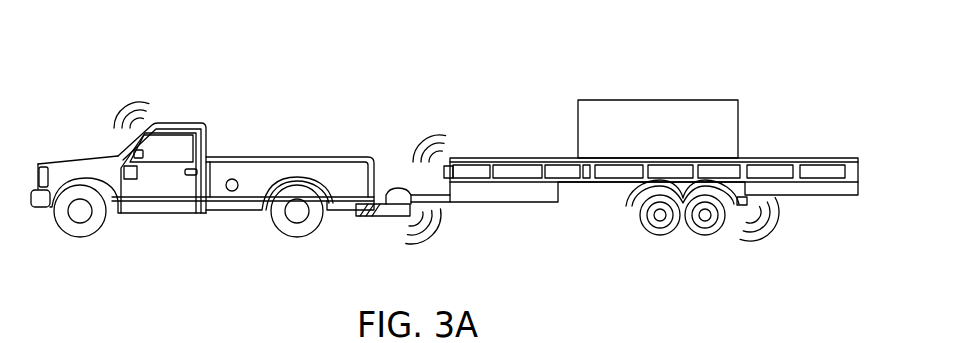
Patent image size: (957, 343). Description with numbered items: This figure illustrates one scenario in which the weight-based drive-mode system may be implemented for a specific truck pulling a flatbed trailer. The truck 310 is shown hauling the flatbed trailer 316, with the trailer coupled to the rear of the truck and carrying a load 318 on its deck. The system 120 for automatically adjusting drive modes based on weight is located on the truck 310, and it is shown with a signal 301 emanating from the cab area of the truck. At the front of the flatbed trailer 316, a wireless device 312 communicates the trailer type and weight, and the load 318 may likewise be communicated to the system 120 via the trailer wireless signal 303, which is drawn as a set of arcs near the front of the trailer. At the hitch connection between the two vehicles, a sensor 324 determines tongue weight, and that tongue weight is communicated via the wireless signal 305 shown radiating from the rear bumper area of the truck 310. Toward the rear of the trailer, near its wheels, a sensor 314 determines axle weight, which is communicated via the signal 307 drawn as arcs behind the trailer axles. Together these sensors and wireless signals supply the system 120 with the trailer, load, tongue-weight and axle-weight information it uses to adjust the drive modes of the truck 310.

The system 120 is at (130, 180).
The first signal 301 is at (128, 96).
The trailer wireless signal 303 is at (416, 134).
The wireless signal 305 is at (440, 222).
The signal 307 is at (775, 226).
The truck 310 is at (254, 175).
The wireless device 312 is at (444, 174).
The sensor 314 is at (748, 203).
The flatbed trailer 316 is at (820, 160).
The load 318 is at (689, 122).
The sensor 324 is at (382, 216).